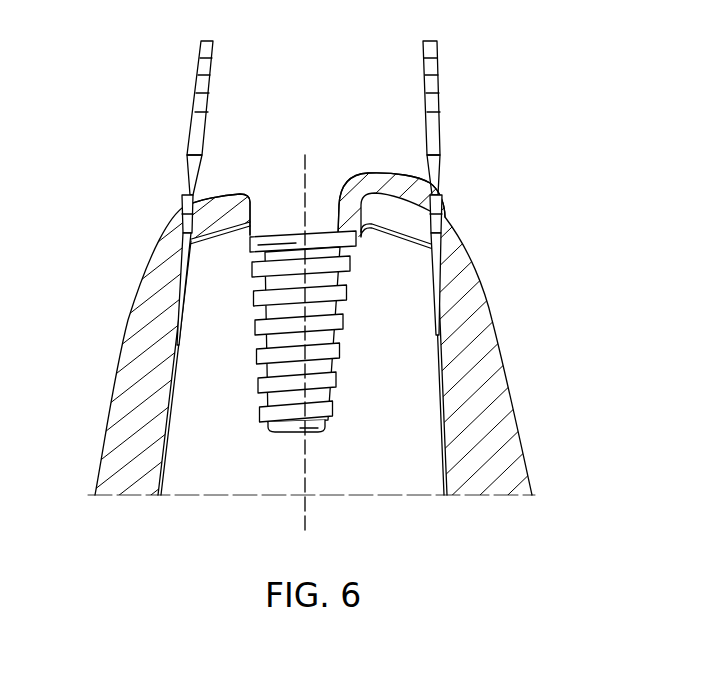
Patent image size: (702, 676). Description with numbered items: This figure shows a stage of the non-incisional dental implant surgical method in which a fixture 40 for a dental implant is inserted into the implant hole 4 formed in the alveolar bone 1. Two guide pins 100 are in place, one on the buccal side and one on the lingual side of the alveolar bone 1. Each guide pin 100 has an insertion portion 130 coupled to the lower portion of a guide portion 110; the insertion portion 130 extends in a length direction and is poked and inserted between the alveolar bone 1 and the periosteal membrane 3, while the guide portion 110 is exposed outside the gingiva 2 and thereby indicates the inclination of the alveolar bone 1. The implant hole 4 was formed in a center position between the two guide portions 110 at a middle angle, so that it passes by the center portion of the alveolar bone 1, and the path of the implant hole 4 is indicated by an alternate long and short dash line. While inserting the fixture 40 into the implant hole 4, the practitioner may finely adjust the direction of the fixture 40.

The alveolar bone 1 is at (413, 434).
The gingiva 2 is at (470, 280).
The periosteal membrane 3 is at (442, 407).
The implant hole 4 is at (262, 368).
The fixture 40 is at (378, 173).
The guide pin 100 is at (319, 104).
The guide portion 110 is at (185, 124).
The insertion portion 130 is at (166, 264).